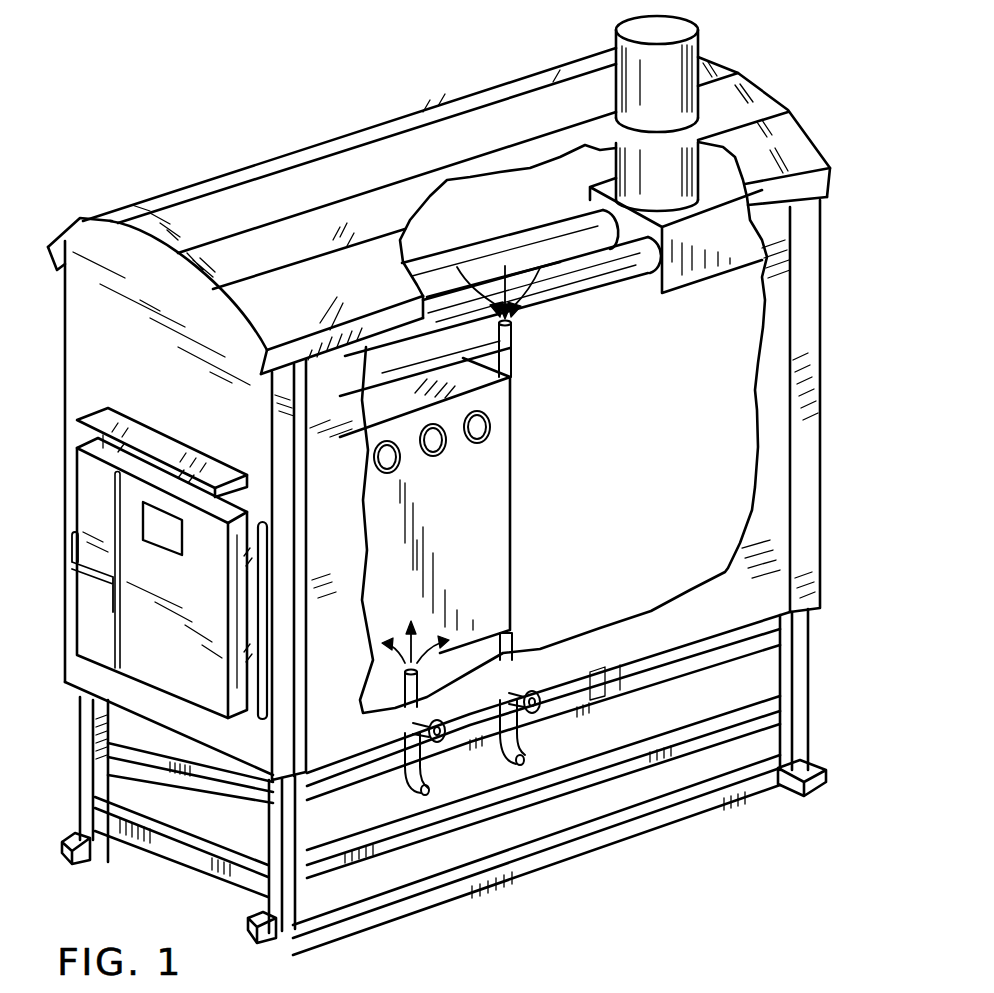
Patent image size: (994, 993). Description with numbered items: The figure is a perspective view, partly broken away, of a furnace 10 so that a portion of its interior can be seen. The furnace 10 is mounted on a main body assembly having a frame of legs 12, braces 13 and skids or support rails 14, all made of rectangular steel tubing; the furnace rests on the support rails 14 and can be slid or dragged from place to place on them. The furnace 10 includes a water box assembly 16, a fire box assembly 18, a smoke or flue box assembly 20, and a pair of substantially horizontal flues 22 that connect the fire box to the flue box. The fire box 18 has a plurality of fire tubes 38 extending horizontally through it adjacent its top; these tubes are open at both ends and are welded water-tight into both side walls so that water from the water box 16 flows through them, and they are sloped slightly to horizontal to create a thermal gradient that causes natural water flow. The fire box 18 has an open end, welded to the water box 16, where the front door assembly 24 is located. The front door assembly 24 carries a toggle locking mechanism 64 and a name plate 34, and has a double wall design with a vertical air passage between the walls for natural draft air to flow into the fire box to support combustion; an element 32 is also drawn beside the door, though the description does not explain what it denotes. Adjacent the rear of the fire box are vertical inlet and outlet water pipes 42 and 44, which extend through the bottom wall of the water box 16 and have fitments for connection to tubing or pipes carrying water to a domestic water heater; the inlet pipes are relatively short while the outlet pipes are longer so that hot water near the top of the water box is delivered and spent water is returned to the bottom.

The furnace 10 is at (824, 383).
The legs 12 is at (110, 752).
The braces 13 is at (248, 889).
The skids or support rails 14 is at (152, 860).
The water box assembly 16 is at (728, 333).
The fire box assembly 18 is at (512, 540).
The smoke or flue box assembly 20 is at (722, 194).
The horizontal flues 22 is at (530, 226).
The front door assembly 24 is at (180, 680).
The door handle bar 32 is at (268, 620).
The name plate 34 is at (168, 547).
The fire tubes 38 is at (448, 452).
The inlet water pipe 42 is at (430, 689).
The outlet water pipe 44 is at (517, 360).
The toggle locking mechanism 64 is at (70, 525).